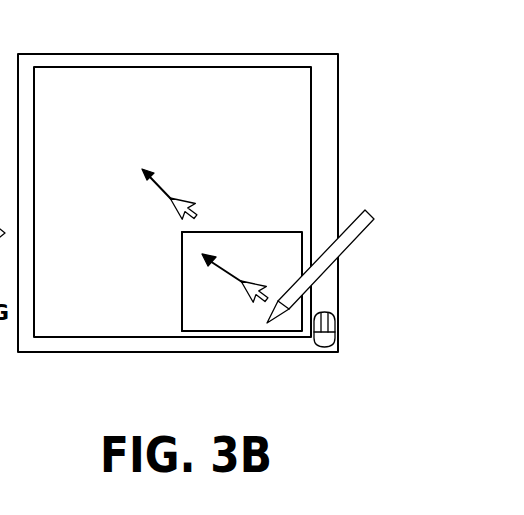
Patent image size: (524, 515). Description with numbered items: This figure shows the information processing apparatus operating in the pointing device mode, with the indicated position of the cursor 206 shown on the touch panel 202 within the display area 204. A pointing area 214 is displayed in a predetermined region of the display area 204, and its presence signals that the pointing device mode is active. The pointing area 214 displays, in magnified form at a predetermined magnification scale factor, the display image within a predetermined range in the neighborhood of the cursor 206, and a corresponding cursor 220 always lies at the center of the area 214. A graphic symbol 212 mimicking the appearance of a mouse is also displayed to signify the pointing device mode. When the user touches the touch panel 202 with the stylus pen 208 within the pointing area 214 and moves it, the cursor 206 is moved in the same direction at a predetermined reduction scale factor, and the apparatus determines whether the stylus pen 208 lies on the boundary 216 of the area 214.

The touch panel 202 is at (25, 353).
The display area 204 is at (67, 82).
The cursor 206 is at (186, 212).
The stylus pen 208 is at (360, 214).
The graphic symbol 212 is at (325, 348).
The pointing area 214 is at (213, 325).
The boundary 216 is at (182, 302).
The cursor 220 is at (244, 286).